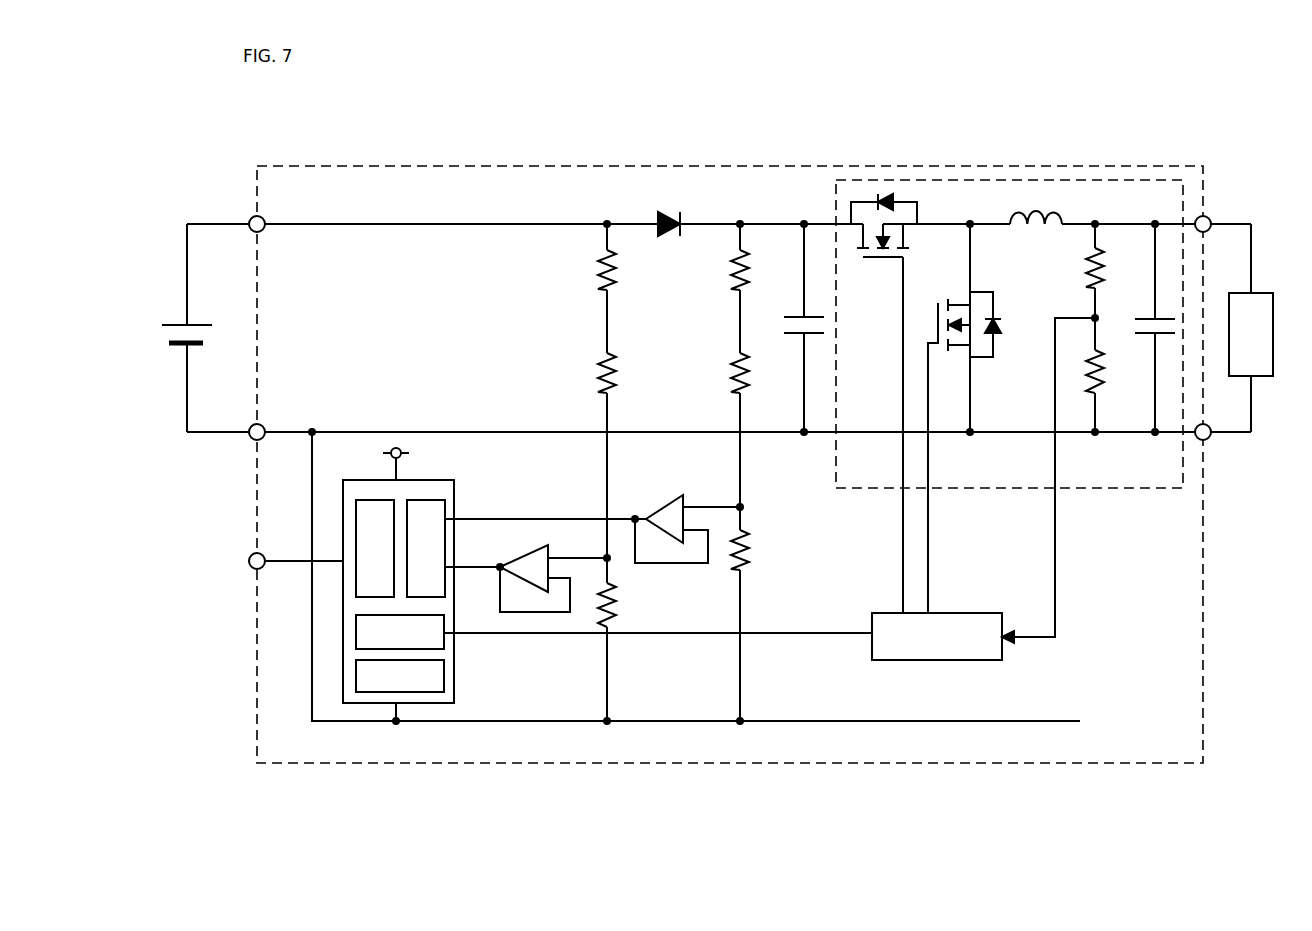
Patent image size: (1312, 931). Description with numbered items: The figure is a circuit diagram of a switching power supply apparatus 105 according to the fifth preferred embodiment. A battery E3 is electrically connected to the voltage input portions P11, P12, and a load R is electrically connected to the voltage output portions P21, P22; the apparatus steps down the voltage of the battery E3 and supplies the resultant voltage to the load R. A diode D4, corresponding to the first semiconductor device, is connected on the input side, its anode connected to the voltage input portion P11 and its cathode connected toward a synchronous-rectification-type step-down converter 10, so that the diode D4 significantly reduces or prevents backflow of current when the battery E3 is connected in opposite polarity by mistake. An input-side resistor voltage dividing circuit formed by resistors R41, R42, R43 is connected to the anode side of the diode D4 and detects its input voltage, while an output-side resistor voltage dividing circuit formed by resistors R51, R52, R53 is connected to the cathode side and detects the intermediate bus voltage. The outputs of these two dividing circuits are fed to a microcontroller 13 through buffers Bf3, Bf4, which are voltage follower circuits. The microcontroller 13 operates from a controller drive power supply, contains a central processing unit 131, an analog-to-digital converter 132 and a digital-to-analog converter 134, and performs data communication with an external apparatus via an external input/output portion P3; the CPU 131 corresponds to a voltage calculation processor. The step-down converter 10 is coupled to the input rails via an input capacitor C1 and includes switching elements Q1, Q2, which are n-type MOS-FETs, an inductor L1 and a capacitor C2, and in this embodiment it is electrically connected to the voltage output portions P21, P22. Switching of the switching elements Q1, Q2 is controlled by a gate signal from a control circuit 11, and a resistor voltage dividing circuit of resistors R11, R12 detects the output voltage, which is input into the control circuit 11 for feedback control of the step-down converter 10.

The switching power supply apparatus 105 is at (270, 166).
The step-down converter 10 is at (855, 180).
The control circuit 11 is at (977, 612).
The microcontroller 13 is at (427, 480).
The central processing unit 131 is at (354, 537).
The analog-to-digital converter 132 is at (447, 510).
The digital-to-analog converter 134 is at (446, 640).
The battery E3 is at (181, 323).
The voltage input portion P11 is at (238, 216).
The voltage input portion P12 is at (238, 445).
The voltage output portion P21 is at (1221, 215).
The voltage output portion P22 is at (1221, 446).
The external input/output portion P3 is at (278, 561).
The load R is at (1251, 328).
The diode D4 is at (669, 210).
The resistor R41 is at (588, 270).
The resistor R42 is at (588, 373).
The resistor R43 is at (626, 605).
The resistor R51 is at (720, 270).
The resistor R52 is at (720, 373).
The resistor R53 is at (760, 550).
The input capacitor C1 is at (797, 328).
The capacitor C2 is at (1149, 328).
The switching element Q1 is at (896, 403).
The switching element Q2 is at (964, 452).
The inductor L1 is at (1036, 232).
The resistor R11 is at (1113, 268).
The resistor R12 is at (1113, 375).
The buffer Bf3 is at (553, 571).
The buffer Bf4 is at (687, 516).